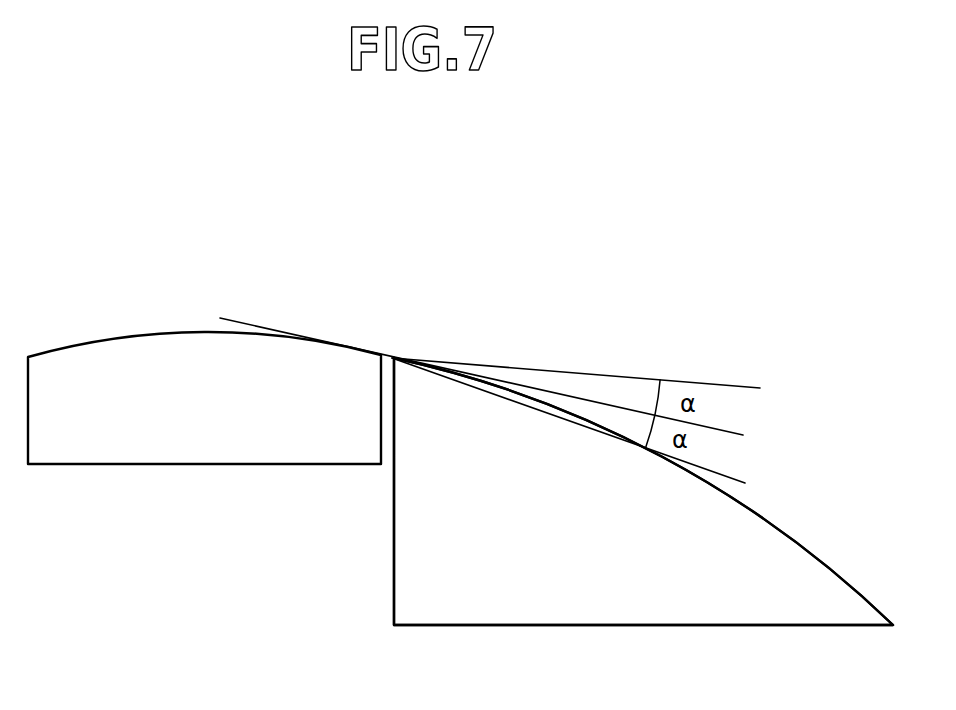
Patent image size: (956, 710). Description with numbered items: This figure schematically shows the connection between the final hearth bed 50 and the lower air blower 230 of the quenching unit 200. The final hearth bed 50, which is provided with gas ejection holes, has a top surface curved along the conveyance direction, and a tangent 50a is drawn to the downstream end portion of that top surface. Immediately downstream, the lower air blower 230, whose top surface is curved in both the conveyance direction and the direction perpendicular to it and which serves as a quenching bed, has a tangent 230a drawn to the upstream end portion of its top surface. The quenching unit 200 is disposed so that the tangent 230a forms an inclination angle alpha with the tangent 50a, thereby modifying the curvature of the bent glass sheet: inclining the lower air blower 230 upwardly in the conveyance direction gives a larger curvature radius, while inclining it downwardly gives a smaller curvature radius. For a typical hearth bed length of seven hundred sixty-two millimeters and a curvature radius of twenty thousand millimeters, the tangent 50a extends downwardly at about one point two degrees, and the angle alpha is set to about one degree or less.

The final hearth bed 50 is at (110, 437).
The tangent to downstream end portion of top surface of final hearth bed 50a is at (267, 329).
The lower air blower 230 is at (422, 537).
The quenching unit 200 is at (580, 491).
The tangent to upstream end portion of top surface of lower air blower 230a is at (692, 381).